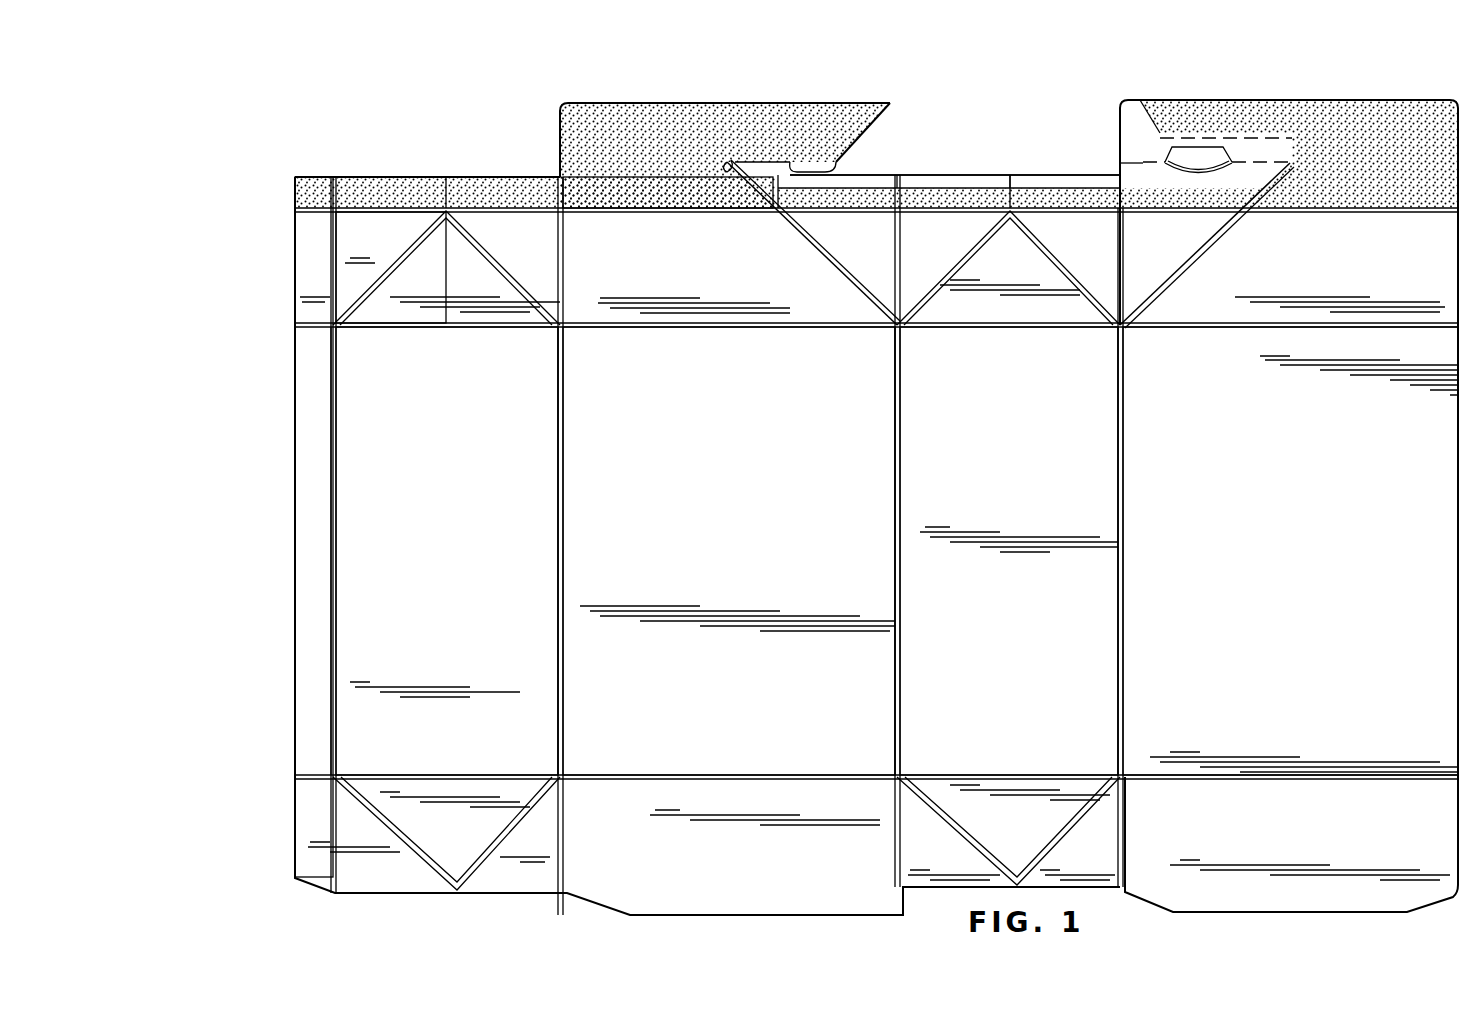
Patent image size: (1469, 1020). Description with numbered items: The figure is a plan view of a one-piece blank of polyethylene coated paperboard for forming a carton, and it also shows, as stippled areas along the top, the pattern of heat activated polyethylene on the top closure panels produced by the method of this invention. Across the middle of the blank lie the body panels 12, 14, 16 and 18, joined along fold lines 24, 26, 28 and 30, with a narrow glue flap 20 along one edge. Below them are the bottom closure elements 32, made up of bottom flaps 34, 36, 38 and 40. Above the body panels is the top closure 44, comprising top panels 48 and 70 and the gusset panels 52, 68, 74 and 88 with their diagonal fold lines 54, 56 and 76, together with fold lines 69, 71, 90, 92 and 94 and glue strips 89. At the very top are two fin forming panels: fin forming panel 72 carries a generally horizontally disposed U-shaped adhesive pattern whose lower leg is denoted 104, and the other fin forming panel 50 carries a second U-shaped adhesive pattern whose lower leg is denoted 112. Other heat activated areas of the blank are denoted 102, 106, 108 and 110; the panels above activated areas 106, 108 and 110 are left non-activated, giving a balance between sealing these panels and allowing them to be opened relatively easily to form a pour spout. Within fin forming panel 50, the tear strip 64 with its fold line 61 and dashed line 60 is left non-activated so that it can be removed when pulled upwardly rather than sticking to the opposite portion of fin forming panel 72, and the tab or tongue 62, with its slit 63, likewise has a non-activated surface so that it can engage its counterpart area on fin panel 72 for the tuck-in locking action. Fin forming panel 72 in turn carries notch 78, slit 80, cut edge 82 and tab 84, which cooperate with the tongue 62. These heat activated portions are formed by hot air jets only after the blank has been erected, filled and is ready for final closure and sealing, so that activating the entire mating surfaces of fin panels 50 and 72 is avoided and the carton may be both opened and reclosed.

The side panel 12 is at (1290, 551).
The end panel 14 is at (1009, 551).
The side panel 16 is at (729, 551).
The end panel 18 is at (447, 551).
The glue flap 20 is at (305, 437).
The fold line 24 is at (1125, 441).
The fold line 26 is at (900, 440).
The fold line 28 is at (565, 475).
The fold line 30 is at (335, 425).
The bottom closure flaps 32 is at (545, 905).
The bottom flap 34 is at (1310, 846).
The bottom gusset flap 36 is at (1008, 831).
The bottom flap 38 is at (765, 838).
The bottom gusset flap 40 is at (434, 833).
The top closure 44 is at (292, 250).
The top panel 48 is at (1340, 283).
The fin forming panel 50 is at (1345, 110).
The top gusset panel 52 is at (1144, 281).
The diagonal fold line 54 is at (1190, 262).
The fold line extension 56 is at (1272, 186).
The dashed fold line 60 is at (1258, 140).
The fold line 61 is at (1127, 167).
The tab or tongue 62 is at (1190, 150).
The tab slit 63 is at (1175, 172).
The tear strip 64 is at (1140, 147).
The top gusset panel 68 is at (1008, 268).
The fold line 69 is at (940, 185).
The top panel 70 is at (694, 290).
The fold line 71 is at (865, 185).
The fin forming panel 72 is at (690, 103).
The top gusset panel 74 is at (949, 224).
The diagonal fold line 76 is at (845, 268).
The notch 78 is at (727, 160).
The slit 80 is at (768, 160).
The cut edge 82 is at (890, 103).
The tab 84 is at (822, 170).
The top gusset panel 88 is at (446, 268).
The glue strip 89 is at (383, 190).
The fold line 90 is at (543, 210).
The fold line 92 is at (430, 325).
The fold line 94 is at (458, 777).
The heat activated area 102 is at (408, 207).
The lower leg of the U 104 is at (685, 193).
The heat activated area 106 is at (840, 205).
The heat activated area 108 is at (932, 195).
The heat activated area 110 is at (1070, 195).
The lower leg of the U 112 is at (1195, 197).